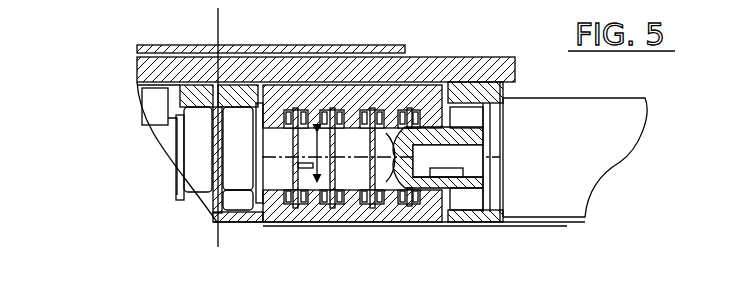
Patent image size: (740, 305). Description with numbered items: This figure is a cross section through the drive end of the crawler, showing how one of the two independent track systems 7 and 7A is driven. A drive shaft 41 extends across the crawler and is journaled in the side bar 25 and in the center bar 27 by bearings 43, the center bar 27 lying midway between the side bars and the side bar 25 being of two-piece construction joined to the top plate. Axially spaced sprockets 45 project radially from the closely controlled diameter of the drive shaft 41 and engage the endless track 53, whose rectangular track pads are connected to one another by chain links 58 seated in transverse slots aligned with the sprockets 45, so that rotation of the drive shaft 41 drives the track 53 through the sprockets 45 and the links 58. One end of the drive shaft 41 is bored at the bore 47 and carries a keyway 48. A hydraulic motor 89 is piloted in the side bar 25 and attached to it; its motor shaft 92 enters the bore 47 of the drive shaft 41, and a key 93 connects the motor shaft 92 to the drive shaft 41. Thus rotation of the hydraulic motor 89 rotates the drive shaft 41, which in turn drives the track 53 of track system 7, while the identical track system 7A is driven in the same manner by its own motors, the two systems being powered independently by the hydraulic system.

The track system 7 is at (382, 228).
The track system 7A is at (147, 125).
The side bar 25 is at (463, 226).
The center bar 27 is at (241, 225).
The drive shaft 41 is at (296, 208).
The bearing 43 is at (238, 115).
The sprocket 45 is at (328, 120).
The bore 47 is at (398, 175).
The keyway 48 is at (481, 171).
The endless track 53 is at (413, 228).
The chain link 58 is at (363, 202).
The hydraulic motor 89 is at (549, 228).
The motor shaft 92 is at (478, 150).
The key 93 is at (458, 174).